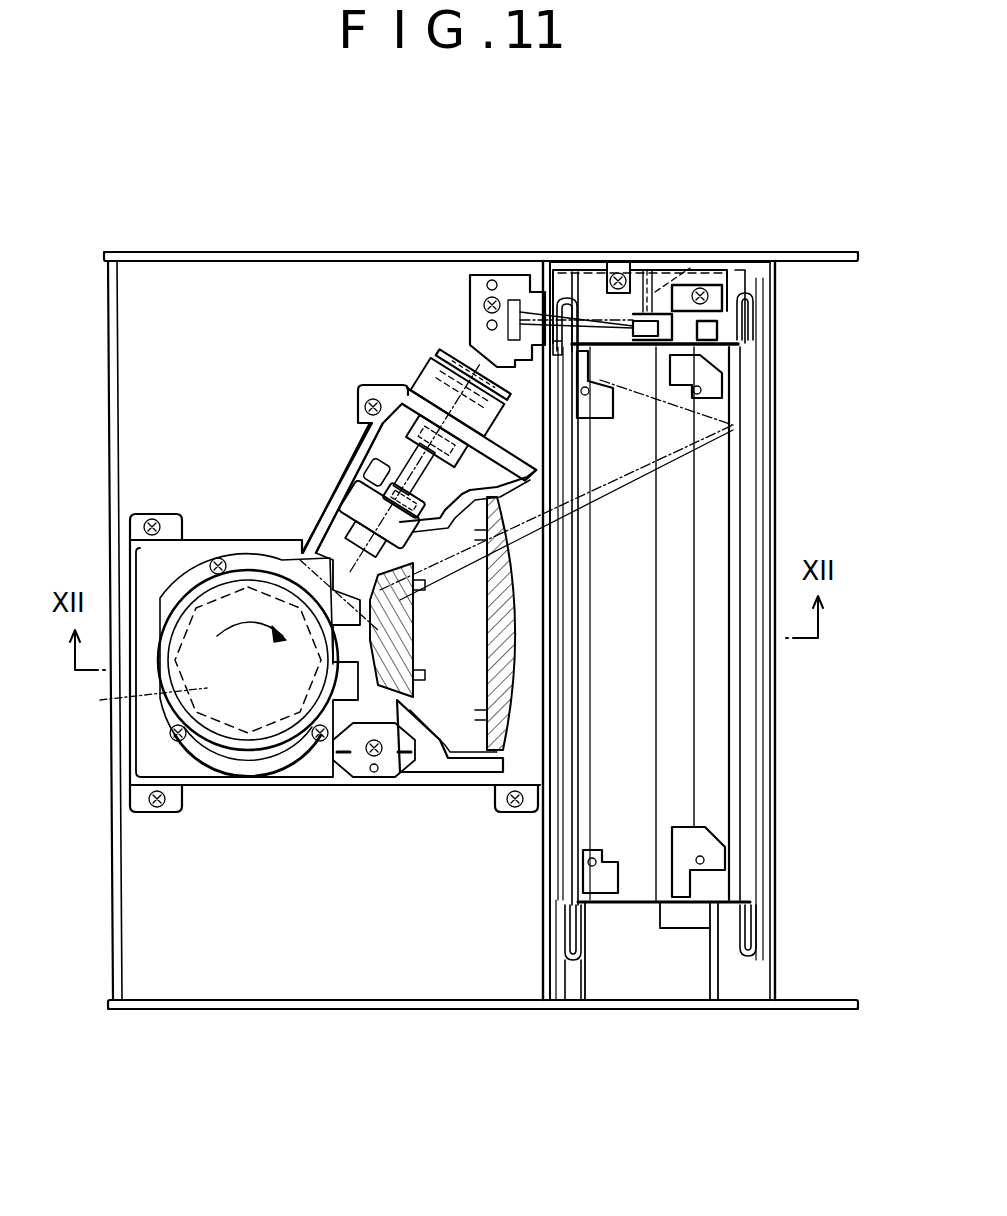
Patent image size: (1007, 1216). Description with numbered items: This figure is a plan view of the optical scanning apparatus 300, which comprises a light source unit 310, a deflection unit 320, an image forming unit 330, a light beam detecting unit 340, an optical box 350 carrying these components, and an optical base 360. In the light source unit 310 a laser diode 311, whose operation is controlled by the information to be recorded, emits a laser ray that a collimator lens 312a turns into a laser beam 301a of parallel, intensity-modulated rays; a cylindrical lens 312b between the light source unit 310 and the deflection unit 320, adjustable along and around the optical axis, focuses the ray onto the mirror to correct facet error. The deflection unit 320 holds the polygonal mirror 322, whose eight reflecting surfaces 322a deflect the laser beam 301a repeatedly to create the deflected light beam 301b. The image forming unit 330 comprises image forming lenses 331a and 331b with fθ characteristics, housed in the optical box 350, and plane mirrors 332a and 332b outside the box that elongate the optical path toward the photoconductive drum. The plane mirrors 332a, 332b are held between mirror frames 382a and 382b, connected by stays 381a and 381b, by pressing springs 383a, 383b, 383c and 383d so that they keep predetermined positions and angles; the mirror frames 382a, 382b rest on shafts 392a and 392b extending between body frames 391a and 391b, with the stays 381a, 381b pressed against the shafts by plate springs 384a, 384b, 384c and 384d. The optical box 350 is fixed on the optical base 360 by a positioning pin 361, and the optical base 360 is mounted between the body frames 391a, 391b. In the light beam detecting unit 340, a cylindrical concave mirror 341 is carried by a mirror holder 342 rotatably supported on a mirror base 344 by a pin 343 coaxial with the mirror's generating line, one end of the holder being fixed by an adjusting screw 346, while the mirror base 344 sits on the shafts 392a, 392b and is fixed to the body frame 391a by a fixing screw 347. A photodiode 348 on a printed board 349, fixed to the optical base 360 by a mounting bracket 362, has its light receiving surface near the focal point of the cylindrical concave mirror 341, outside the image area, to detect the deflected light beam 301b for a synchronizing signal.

The optical scanning apparatus 300 is at (298, 250).
The laser beam 301a is at (335, 560).
The deflected light beam 301b is at (385, 620).
The light source unit 310 is at (428, 388).
The laser diode 311 is at (452, 372).
The collimator lens 312a is at (372, 432).
The cylindrical lens 312b is at (373, 478).
The deflection unit 320 is at (175, 727).
The polygonal mirror 322 is at (150, 703).
The reflecting surfaces 322a is at (264, 738).
The image forming unit 330 is at (468, 745).
The image forming lens 331a is at (360, 516).
The image forming lens 331b is at (487, 678).
The plane mirror 332a is at (757, 465).
The plane mirror 332b is at (563, 895).
The light beam detecting unit 340 is at (573, 265).
The cylindrical concave mirror 341 is at (648, 340).
The mirror holder 342 is at (725, 283).
The pin 343 is at (690, 262).
The mirror base 344 is at (652, 272).
The adjusting screw 346 is at (748, 292).
The fixing screw 347 is at (618, 270).
The photodiode 348 is at (505, 318).
The printed board 349 is at (527, 305).
The optical box 350 is at (430, 787).
The optical base 360 is at (110, 974).
The positioning pin 361 is at (385, 780).
The mounting bracket 362 is at (470, 285).
The stay 381a is at (742, 520).
The stay 381b is at (582, 690).
The mirror frame 382a is at (597, 300).
The mirror frame 382b is at (622, 910).
The pressing spring 383a is at (755, 302).
The pressing spring 383b is at (757, 935).
The pressing spring 383c is at (565, 293).
The pressing spring 383d is at (590, 950).
The plate spring 384a is at (720, 370).
The plate spring 384b is at (728, 835).
The plate spring 384c is at (592, 420).
The plate spring 384d is at (602, 858).
The body frame 391a is at (192, 250).
The body frame 391b is at (384, 1012).
The shaft 392a is at (748, 968).
The shaft 392b is at (578, 1012).